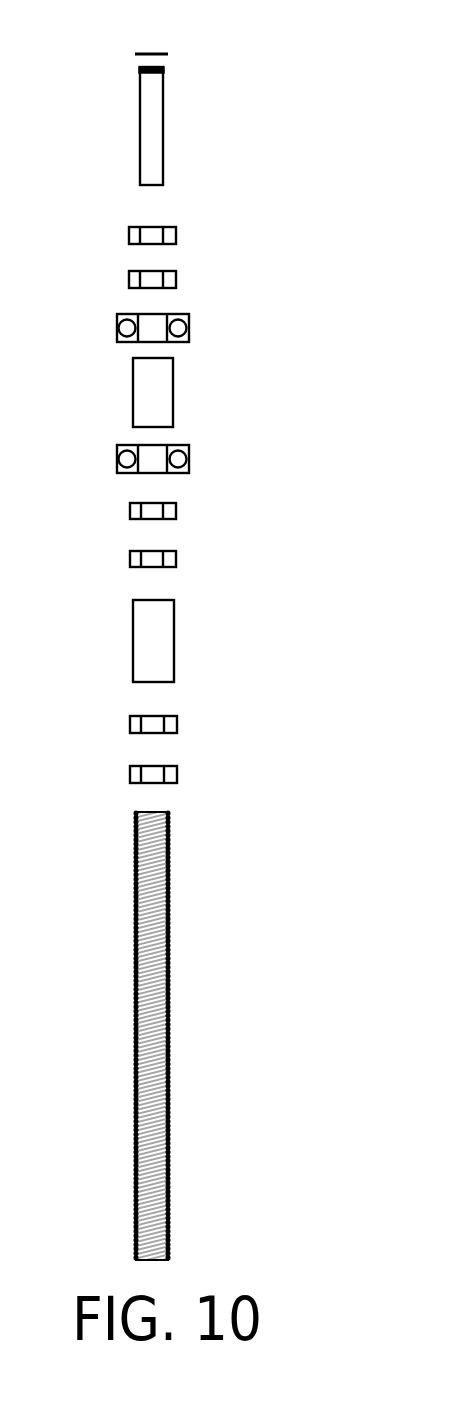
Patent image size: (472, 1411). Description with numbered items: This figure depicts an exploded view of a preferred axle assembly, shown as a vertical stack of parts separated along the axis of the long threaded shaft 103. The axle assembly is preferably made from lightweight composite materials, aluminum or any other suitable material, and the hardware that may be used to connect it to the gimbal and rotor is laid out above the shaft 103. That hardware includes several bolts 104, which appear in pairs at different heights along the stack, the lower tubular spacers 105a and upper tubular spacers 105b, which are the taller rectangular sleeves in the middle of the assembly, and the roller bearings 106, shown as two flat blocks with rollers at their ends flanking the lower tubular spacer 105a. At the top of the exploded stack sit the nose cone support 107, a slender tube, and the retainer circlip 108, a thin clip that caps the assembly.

The threaded rod 103 is at (152, 1018).
The bolts 104 is at (134, 234).
The lower tubular spacers 105a is at (143, 392).
The upper tubular spacers 105b is at (150, 650).
The roller bearings 106 is at (189, 330).
The nose cone support 107 is at (150, 152).
The retainer circlip 108 is at (150, 54).